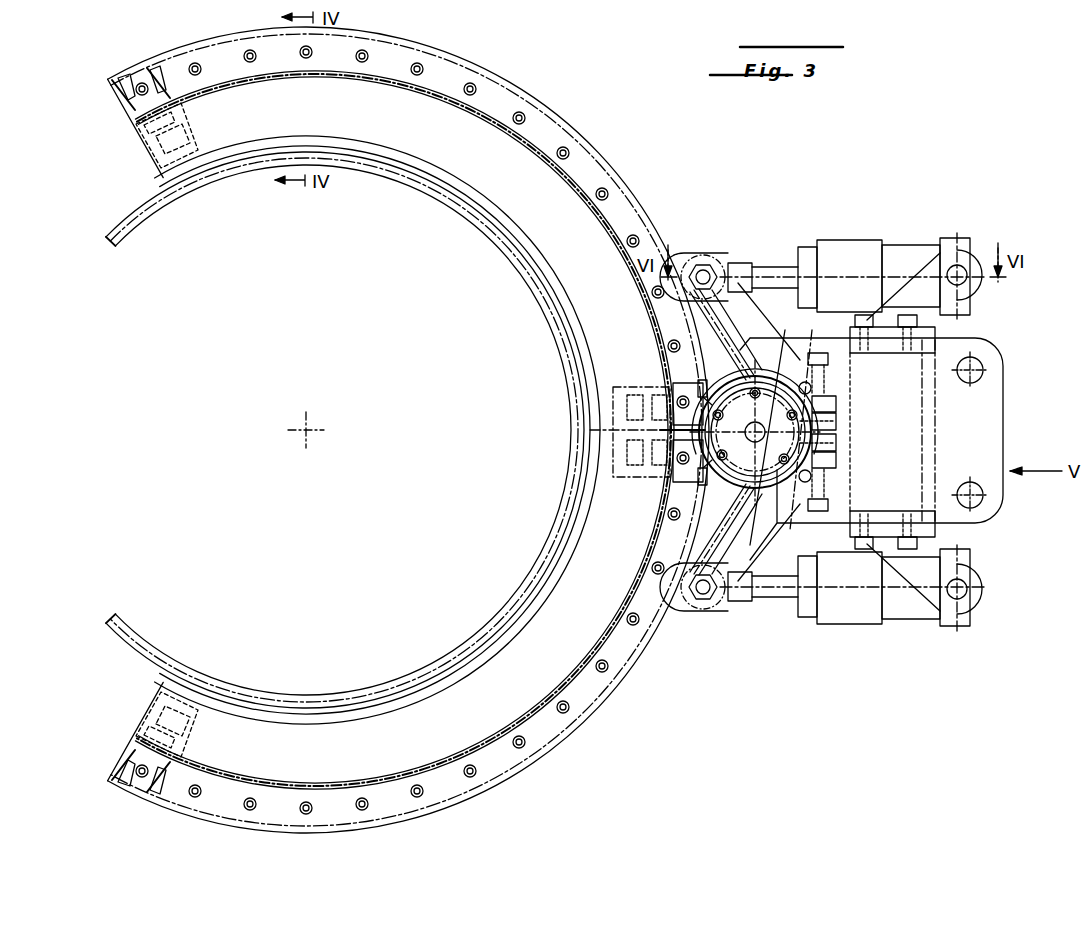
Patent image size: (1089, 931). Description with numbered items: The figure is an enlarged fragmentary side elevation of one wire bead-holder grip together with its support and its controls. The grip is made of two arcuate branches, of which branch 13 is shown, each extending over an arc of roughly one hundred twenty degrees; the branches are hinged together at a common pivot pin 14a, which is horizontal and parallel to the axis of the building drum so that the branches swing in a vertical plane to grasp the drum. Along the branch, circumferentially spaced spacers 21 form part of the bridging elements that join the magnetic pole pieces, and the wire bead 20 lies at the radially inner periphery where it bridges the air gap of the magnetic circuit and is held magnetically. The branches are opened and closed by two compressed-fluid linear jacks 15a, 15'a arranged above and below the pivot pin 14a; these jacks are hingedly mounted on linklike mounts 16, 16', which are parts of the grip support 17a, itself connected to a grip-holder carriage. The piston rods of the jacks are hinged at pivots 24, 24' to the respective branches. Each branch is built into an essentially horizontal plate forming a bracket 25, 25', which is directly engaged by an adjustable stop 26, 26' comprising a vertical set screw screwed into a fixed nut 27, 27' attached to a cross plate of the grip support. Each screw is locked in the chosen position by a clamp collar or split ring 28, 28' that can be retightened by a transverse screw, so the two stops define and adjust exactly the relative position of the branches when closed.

The branch 13 is at (499, 108).
The pivot pin 14a is at (745, 452).
The compressed-fluid linear jack 15a is at (826, 252).
The compressed-fluid linear jack 15'a is at (852, 610).
The linklike mount 16 is at (930, 293).
The linklike mount 16' is at (926, 571).
The grip support 17a is at (992, 455).
The wire bead 20 is at (138, 212).
The spacer 21 is at (251, 60).
The pivot 24 is at (705, 256).
The pivot 24' is at (694, 613).
The bracket 25 is at (749, 331).
The bracket 25' is at (750, 532).
The adjustable stop 26 is at (843, 374).
The adjustable stop 26' is at (842, 490).
The fixed nut 27 is at (855, 425).
The fixed nut 27' is at (845, 446).
The split ring 28 is at (840, 398).
The split ring 28' is at (842, 467).